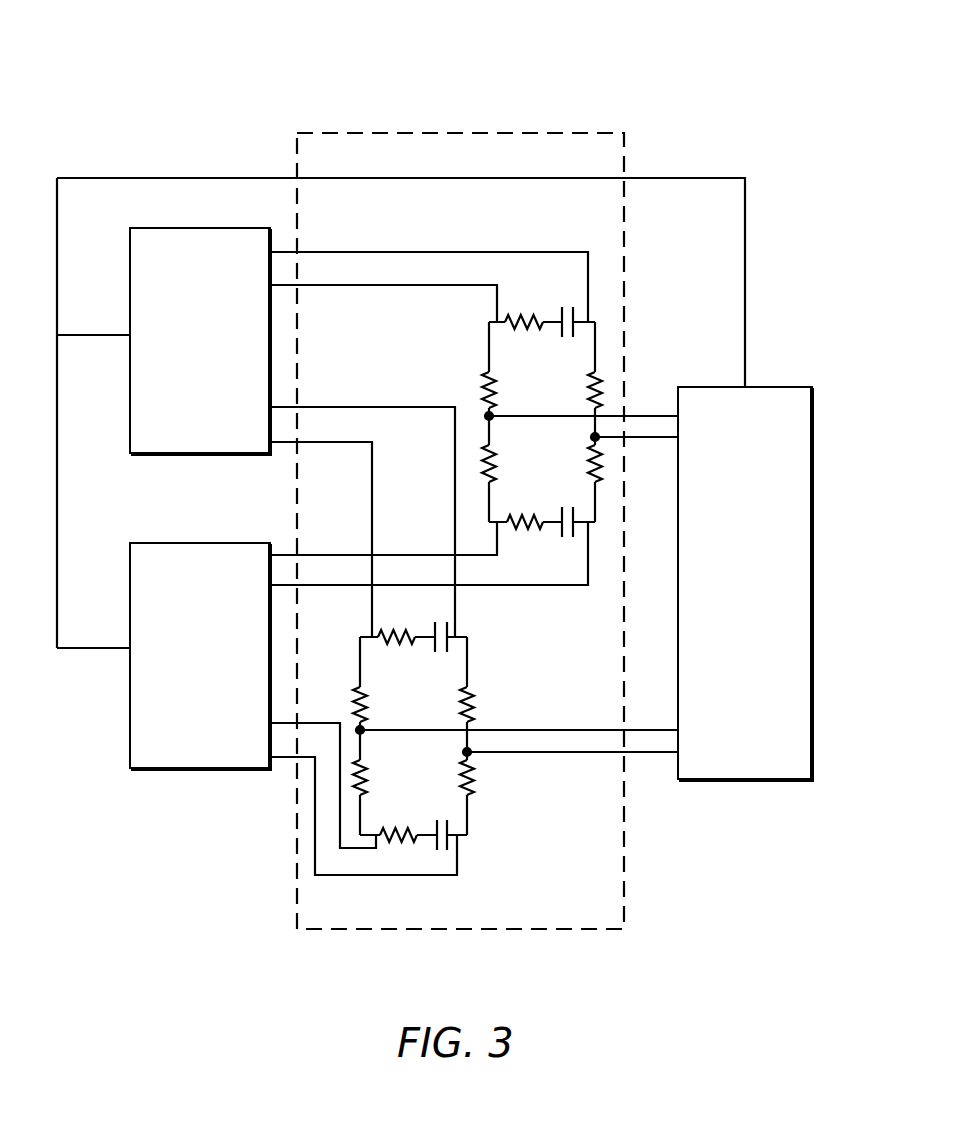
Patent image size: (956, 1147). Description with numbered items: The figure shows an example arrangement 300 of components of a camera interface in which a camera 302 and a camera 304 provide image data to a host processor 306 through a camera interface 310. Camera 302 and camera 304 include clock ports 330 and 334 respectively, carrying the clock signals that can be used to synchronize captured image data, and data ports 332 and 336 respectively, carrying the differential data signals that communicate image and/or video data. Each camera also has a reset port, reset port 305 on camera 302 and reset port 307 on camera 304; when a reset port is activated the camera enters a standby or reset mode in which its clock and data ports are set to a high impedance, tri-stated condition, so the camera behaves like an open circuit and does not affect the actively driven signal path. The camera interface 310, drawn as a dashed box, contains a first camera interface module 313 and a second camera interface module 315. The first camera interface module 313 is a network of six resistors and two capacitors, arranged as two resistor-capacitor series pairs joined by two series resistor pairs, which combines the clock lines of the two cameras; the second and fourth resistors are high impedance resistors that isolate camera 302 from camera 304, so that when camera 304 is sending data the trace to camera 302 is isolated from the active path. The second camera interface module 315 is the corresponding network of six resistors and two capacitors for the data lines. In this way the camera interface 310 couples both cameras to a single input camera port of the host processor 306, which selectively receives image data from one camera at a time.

The example arrangement 300 is at (794, 88).
The camera 302 is at (200, 341).
The camera 304 is at (200, 656).
The reset port 305 is at (130, 338).
The host processor 306 is at (745, 583).
The reset port 307 is at (130, 653).
The camera interface 310 is at (589, 133).
The first camera interface module 313 is at (607, 327).
The second camera interface module 315 is at (478, 680).
The clock port 330 is at (270, 263).
The data port 332 is at (270, 418).
The clock port 334 is at (270, 570).
The data port 336 is at (270, 735).